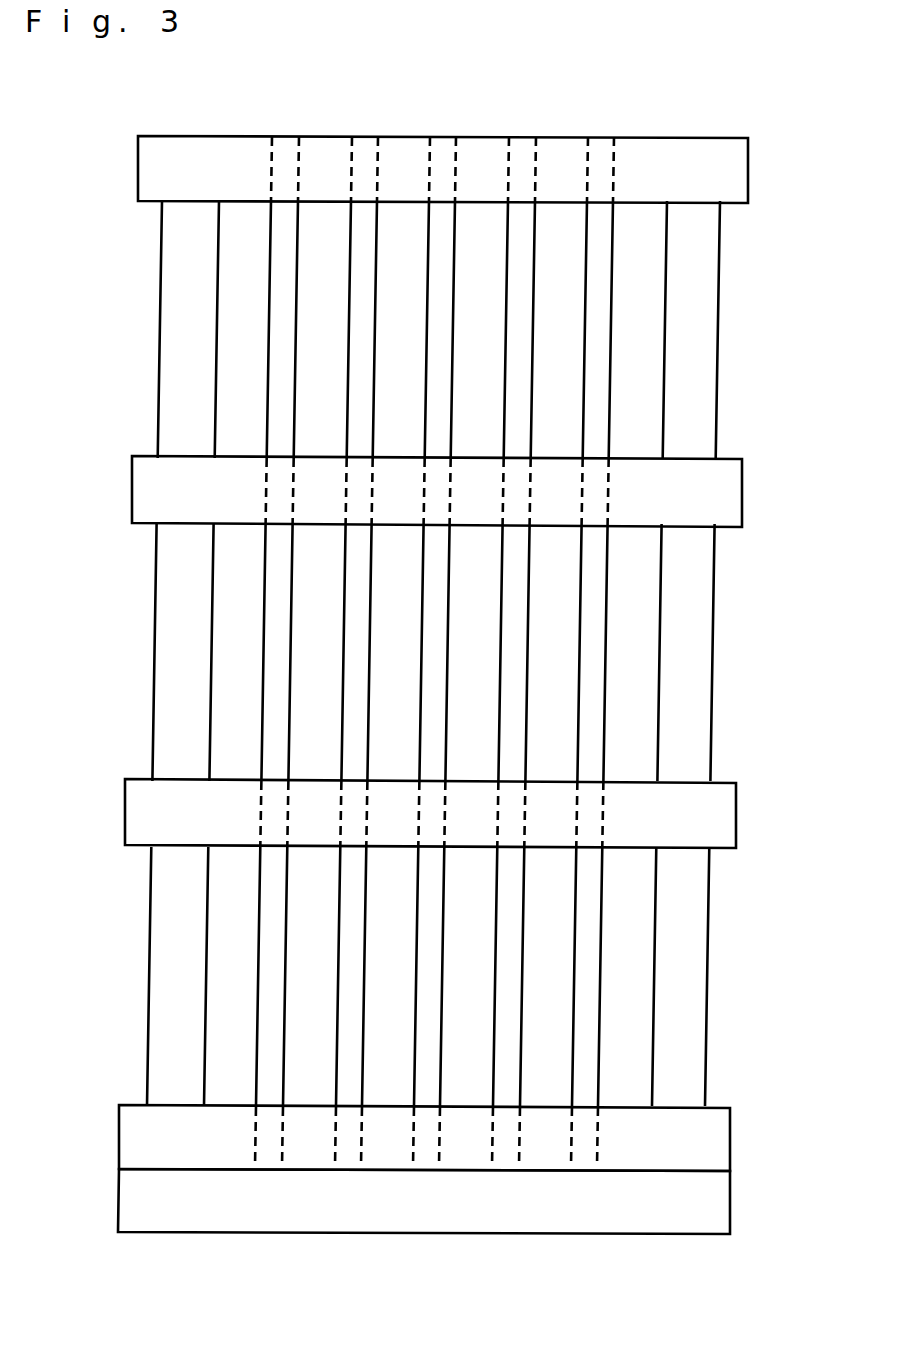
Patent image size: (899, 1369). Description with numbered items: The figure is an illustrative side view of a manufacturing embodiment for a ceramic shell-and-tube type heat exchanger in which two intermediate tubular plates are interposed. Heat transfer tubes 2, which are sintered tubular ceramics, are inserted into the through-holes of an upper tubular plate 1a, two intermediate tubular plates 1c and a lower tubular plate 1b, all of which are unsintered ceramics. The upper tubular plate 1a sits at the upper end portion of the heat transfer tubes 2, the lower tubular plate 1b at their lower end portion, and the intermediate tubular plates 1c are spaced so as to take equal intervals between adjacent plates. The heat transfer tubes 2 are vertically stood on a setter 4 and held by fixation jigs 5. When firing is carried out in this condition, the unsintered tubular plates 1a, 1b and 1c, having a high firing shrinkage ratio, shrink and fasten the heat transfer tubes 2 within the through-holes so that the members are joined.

The upper tubular plate 1a is at (732, 182).
The lower tubular plate 1b is at (707, 1133).
The intermediate tubular plate 1c is at (722, 499).
The heat transfer tubes 2 is at (598, 297).
The setter 4 is at (707, 1207).
The fixation jigs 5 is at (700, 378).